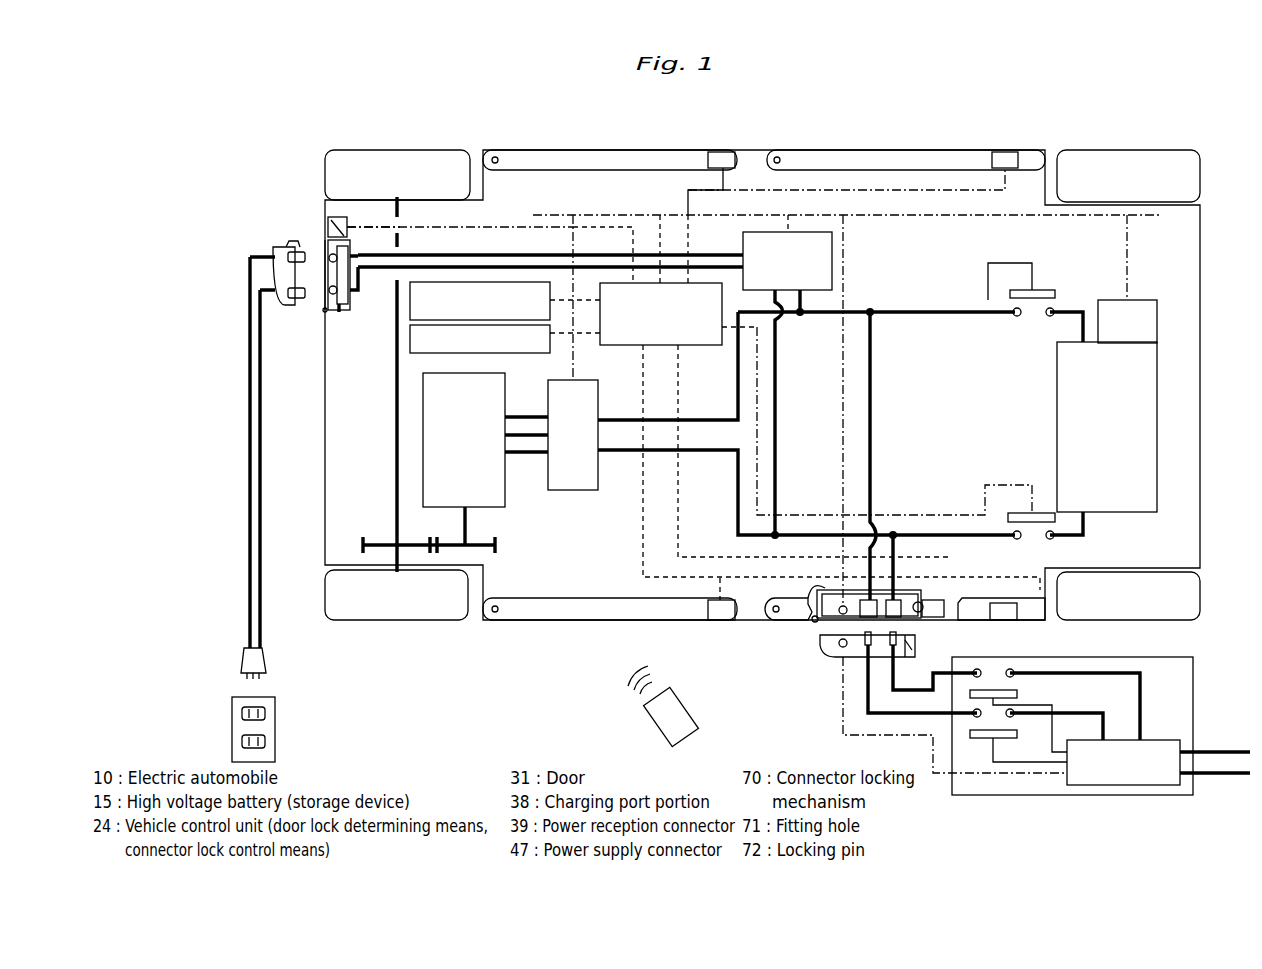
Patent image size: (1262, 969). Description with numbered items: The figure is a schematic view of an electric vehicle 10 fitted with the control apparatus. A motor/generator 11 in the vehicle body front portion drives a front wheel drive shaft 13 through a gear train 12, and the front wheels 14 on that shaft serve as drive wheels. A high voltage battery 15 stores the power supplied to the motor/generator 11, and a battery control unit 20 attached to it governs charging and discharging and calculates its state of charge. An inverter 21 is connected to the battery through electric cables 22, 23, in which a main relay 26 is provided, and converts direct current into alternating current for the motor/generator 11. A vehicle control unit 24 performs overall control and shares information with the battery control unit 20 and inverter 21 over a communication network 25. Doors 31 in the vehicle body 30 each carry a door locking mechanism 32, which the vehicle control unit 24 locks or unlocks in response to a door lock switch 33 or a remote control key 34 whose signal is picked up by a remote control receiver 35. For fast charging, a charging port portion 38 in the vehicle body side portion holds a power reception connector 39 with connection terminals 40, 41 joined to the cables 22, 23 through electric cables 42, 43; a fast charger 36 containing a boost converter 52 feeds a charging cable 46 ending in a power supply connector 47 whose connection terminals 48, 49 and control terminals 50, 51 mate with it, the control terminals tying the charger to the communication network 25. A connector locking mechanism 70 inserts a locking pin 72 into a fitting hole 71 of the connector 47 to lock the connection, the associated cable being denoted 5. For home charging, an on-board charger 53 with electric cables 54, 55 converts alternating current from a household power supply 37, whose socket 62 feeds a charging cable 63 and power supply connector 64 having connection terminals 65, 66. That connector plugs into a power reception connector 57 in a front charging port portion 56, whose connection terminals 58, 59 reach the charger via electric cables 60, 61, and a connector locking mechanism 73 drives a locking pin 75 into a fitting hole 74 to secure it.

The power supply cable 5 is at (912, 646).
The electric vehicle 10 is at (1143, 142).
The motor/generator 11 is at (444, 530).
The gear train 12 is at (508, 548).
The front wheel drive shaft 13 is at (395, 450).
The front wheels 14 is at (455, 155).
The high voltage battery 15 is at (1057, 392).
The battery control unit 20 is at (1146, 300).
The inverter 21 is at (570, 490).
The electric cable 22 is at (953, 316).
The electric cable 23 is at (960, 513).
The vehicle control unit 24 is at (706, 346).
The communication network 25 is at (960, 218).
The main relay 26 is at (1040, 290).
The vehicle body 30 is at (758, 143).
The doors 31 is at (604, 157).
The door locking mechanism 32 is at (722, 152).
The door lock switch 33 is at (526, 353).
The remote control key 34 is at (685, 690).
The remote control receiver 35 is at (495, 282).
The fast charger 36 is at (1193, 685).
The household power supply 37 is at (234, 716).
The charging port portion 38 is at (794, 628).
The power reception connector 39 is at (910, 590).
The connection terminal 40 is at (815, 623).
The connection terminal 41 is at (915, 645).
The electric cable 42 is at (873, 420).
The electric cable 43 is at (896, 540).
The charging cable 46 is at (882, 716).
The power supply connector 47 is at (824, 653).
The connection terminal 48 is at (866, 650).
The connection terminal 49 is at (891, 650).
The control terminal 50 is at (842, 604).
The control terminal 51 is at (840, 650).
The boost converter 52 is at (1162, 740).
The on-board charger 53 is at (743, 242).
The electric cable 54 is at (803, 316).
The electric cable 55 is at (778, 420).
The charging port portion 56 is at (313, 306).
The power reception connector 57 is at (339, 310).
The connection terminal 58 is at (329, 250).
The connection terminal 59 is at (348, 292).
The electric cable 60 is at (415, 226).
The electric cable 61 is at (388, 254).
The socket 62 is at (242, 740).
The charging cable 63 is at (228, 507).
The power supply connector 64 is at (284, 306).
The connection terminal 65 is at (288, 256).
The connection terminal 66 is at (288, 292).
The connector locking mechanism 70 is at (938, 600).
The fitting hole 71 is at (898, 620).
The locking pin 72 is at (922, 612).
The connector locking mechanism 73 is at (333, 216).
The fitting hole 74 is at (290, 242).
The locking pin 75 is at (342, 218).